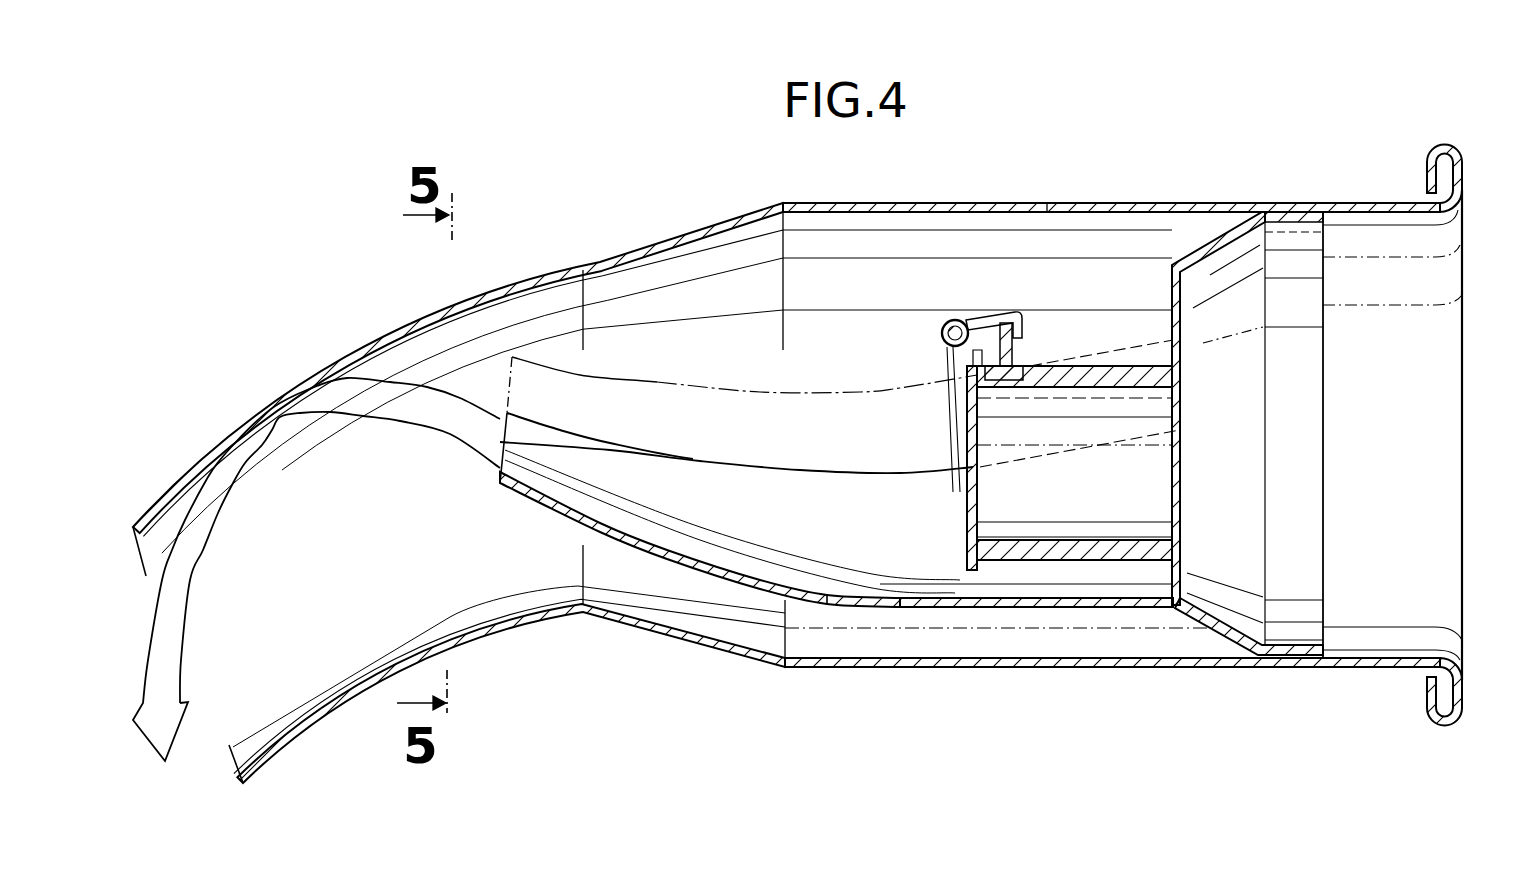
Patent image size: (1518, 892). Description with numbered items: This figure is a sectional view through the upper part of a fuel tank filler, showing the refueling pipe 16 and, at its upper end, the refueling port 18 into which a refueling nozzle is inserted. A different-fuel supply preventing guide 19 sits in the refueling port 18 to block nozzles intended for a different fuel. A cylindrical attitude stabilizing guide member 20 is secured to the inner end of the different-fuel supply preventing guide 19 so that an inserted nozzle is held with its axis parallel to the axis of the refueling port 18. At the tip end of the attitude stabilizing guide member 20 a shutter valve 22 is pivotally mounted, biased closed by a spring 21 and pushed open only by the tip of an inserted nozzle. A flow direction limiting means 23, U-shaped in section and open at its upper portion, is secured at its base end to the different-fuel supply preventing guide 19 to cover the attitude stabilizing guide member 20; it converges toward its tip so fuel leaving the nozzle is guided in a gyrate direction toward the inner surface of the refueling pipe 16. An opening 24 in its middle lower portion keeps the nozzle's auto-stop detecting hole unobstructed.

The refueling pipe 16 is at (627, 254).
The refueling port 18 is at (1423, 462).
The different-fuel supply preventing guide 19 is at (1216, 244).
The attitude stabilizing guide member 20 is at (1064, 366).
The spring 21 is at (980, 316).
The shutter valve 22 is at (967, 511).
The flow direction limiting means 23 is at (556, 505).
The opening 24 is at (920, 605).